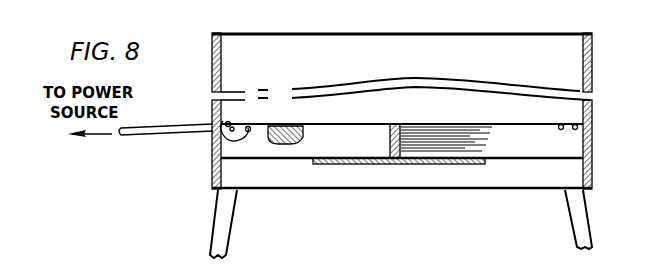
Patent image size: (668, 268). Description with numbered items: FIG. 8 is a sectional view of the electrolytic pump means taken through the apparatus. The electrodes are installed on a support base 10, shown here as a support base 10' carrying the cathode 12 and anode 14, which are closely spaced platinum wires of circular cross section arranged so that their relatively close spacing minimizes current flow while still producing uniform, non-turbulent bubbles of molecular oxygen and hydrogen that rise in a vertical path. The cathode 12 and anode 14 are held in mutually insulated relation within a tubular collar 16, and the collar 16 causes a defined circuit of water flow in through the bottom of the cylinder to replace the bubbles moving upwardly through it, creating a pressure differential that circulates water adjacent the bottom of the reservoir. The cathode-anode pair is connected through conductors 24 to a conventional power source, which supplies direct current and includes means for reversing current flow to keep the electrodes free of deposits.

The support base 10 is at (353, 137).
The support base 10' is at (401, 224).
The cathode 12 is at (235, 122).
The anode 14 is at (255, 120).
The tubular collar 16 is at (597, 63).
The conductors 24 is at (170, 136).